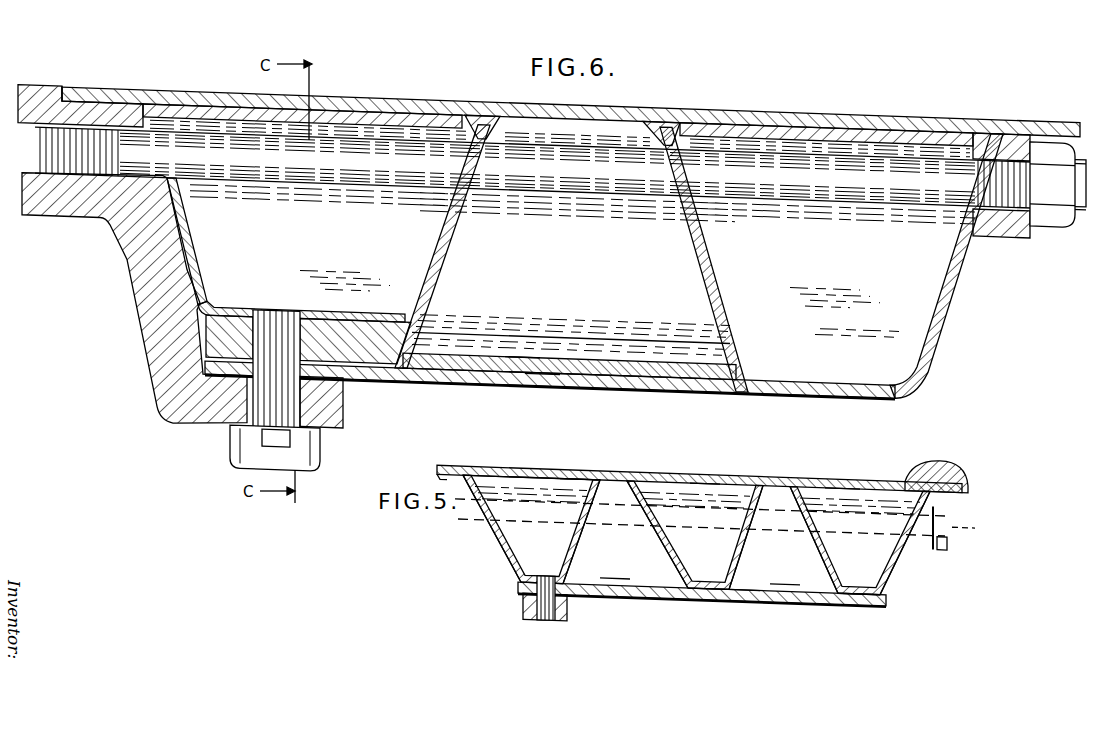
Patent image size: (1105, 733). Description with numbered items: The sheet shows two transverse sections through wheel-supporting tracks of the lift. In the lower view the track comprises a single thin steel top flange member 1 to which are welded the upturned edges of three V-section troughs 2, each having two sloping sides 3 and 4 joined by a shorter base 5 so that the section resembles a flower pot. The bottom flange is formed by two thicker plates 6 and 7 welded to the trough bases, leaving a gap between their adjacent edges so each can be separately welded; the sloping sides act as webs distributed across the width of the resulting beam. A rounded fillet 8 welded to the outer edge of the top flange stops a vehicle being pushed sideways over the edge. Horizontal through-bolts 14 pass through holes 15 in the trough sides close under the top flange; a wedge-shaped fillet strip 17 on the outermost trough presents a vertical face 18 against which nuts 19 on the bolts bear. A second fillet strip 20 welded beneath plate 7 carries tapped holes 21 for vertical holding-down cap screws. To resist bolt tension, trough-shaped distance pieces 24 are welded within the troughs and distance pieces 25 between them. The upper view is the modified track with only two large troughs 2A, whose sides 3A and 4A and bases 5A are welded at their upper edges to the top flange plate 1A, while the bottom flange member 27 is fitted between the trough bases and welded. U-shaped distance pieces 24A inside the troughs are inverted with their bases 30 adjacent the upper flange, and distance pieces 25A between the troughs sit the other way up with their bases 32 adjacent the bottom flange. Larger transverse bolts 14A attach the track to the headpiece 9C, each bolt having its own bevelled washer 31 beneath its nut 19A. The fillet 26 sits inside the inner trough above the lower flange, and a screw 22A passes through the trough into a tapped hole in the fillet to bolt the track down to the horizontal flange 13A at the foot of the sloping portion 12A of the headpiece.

In FIG. 5, the top flange member 1 is at (728, 476).
In FIG. 5, the V-section troughs 2 is at (510, 541).
In FIG. 5, the sloping side 3 is at (498, 536).
In FIG. 5, the sloping side 4 is at (577, 550).
In FIG. 5, the base 5 is at (547, 577).
In FIG. 5, the bottom flange plate 6 is at (744, 596).
In FIG. 5, the bottom flange plate 7 is at (643, 587).
In FIG. 5, the rounded fillet 8 is at (905, 468).
In FIG. 5, the through-bolts 14 is at (527, 510).
In FIG. 5, the holes 15 is at (653, 518).
In FIG. 5, the wedge-shaped fillet strip 17 is at (933, 548).
In FIG. 5, the vertical face 18 is at (940, 545).
In FIG. 5, the nuts 19 is at (950, 529).
In FIG. 5, the second fillet strip 20 is at (560, 620).
In FIG. 5, the tapped holes 21 is at (545, 620).
In FIG. 5, the distance pieces 24 is at (578, 492).
In FIG. 5, the distance pieces 25 is at (610, 567).
In FIG. 6, the top flange plate 1A is at (580, 110).
In FIG. 6, the V-section troughs 2A is at (562, 242).
In FIG. 6, the trough side 3A is at (168, 226).
In FIG. 6, the trough side 4A is at (441, 232).
In FIG. 6, the trough base 5A is at (376, 386).
In FIG. 6, the headpiece 9C is at (48, 102).
In FIG. 6, the sloping portion 12A is at (160, 325).
In FIG. 6, the horizontal flange 13A is at (333, 430).
In FIG. 6, the transverse bolts 14A is at (367, 178).
In FIG. 6, the nut 19A is at (1055, 222).
In FIG. 6, the holding-down screw 22A is at (260, 403).
In FIG. 6, the distance pieces 24A is at (200, 278).
In FIG. 6, the distance pieces 25A is at (613, 338).
In FIG. 6, the fillet 26 is at (360, 330).
In FIG. 6, the bottom flange member 27 is at (540, 377).
In FIG. 6, the bases 30 is at (418, 99).
In FIG. 6, the bevelled washers 31 is at (1005, 238).
In FIG. 6, the bases 32 is at (523, 367).